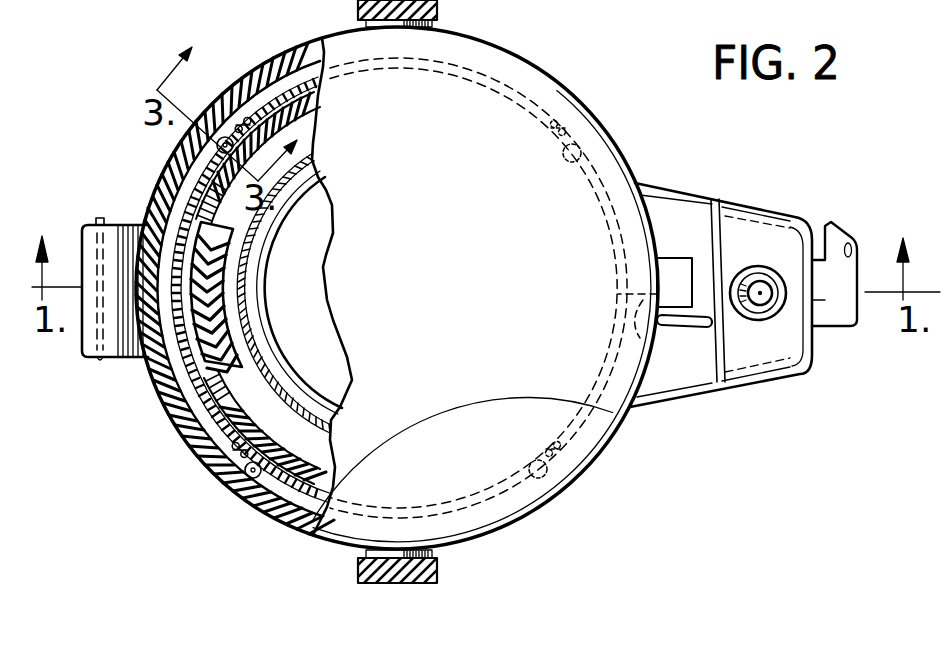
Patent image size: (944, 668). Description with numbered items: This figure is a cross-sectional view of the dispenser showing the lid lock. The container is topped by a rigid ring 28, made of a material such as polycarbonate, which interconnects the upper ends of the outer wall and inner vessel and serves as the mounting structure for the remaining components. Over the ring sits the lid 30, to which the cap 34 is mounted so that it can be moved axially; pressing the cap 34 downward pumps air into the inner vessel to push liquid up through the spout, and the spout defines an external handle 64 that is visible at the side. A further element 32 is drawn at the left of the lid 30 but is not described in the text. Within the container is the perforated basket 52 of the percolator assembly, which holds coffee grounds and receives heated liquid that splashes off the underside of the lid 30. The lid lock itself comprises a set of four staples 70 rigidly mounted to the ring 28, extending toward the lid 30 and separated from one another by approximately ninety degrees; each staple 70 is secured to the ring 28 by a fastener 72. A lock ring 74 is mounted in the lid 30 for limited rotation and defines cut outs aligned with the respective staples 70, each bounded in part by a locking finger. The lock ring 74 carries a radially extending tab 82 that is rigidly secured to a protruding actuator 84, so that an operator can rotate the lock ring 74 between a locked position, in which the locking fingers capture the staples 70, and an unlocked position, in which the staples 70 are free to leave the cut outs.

The rigid ring 28 is at (205, 358).
The lid 30 is at (505, 39).
The handle pin 32 is at (100, 218).
The cap 34 is at (416, 310).
The perforated basket 52 is at (297, 414).
The external handle 64 is at (830, 228).
The staples 70 is at (243, 120).
The fastener 72 is at (216, 145).
The lock ring 74 is at (197, 420).
The radially extending tab 82 is at (642, 345).
The protruding actuator 84 is at (700, 330).